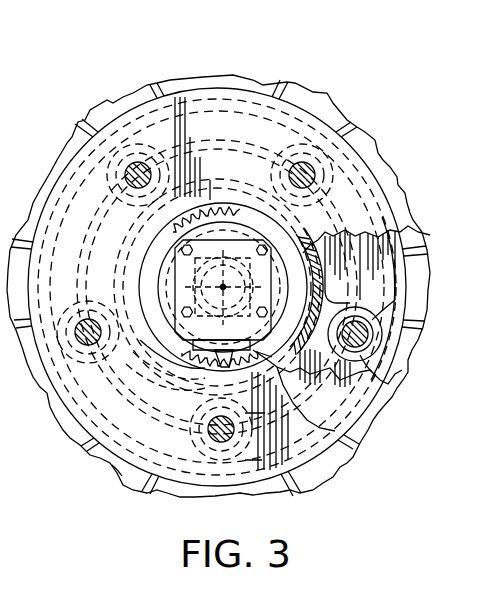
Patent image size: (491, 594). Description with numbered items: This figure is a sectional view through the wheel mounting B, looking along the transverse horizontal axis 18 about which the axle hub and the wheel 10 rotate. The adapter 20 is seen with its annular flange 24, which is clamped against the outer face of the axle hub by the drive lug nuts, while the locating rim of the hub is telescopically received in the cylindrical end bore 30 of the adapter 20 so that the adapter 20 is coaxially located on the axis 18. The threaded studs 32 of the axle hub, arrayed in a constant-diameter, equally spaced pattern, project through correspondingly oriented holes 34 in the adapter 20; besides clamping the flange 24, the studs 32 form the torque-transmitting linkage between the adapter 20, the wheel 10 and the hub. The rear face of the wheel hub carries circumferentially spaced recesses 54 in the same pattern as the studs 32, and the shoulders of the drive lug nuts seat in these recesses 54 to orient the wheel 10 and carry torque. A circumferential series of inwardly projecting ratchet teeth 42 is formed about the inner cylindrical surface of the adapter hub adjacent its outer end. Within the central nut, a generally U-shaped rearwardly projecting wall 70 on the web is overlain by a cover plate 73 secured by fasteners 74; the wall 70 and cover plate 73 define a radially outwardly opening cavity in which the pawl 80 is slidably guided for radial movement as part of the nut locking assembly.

The wheel 10 is at (377, 137).
The adapter 20 is at (263, 89).
The wheel mounting B is at (327, 108).
The threaded studs 32 is at (308, 175).
The holes 34 is at (222, 442).
The transverse horizontal axis 18 is at (223, 287).
The U-shaped rearwardly projecting wall 70 is at (115, 250).
The fasteners 74 is at (183, 248).
The cover plate 73 is at (173, 296).
The ratchet teeth 42 is at (207, 360).
The cylindrical end bore 30 is at (167, 350).
The pawl 80 is at (257, 352).
The recesses 54 is at (365, 373).
The annular flange 24 is at (118, 470).